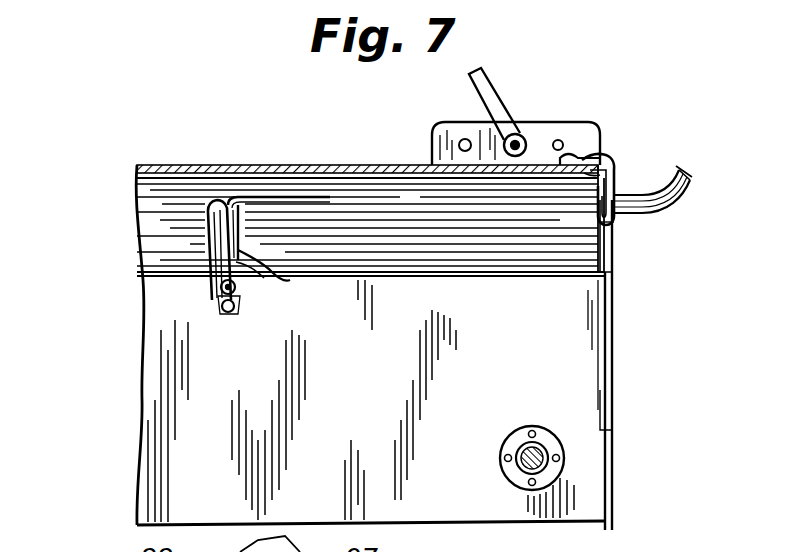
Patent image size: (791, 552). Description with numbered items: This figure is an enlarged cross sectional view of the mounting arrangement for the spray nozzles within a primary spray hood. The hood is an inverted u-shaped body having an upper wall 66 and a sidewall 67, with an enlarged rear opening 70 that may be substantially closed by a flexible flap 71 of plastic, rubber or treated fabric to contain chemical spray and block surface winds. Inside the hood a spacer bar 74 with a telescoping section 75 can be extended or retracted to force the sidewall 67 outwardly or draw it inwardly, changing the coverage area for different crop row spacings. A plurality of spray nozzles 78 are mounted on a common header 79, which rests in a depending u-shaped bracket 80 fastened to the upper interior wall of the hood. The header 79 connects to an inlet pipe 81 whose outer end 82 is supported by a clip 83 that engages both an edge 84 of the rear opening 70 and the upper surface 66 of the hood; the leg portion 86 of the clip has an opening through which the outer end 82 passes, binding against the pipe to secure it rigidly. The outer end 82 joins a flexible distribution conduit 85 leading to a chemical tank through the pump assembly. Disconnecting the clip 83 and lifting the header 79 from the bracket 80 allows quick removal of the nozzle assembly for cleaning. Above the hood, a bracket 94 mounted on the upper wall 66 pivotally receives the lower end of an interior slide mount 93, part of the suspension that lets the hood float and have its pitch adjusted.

The upper wall 66 is at (268, 133).
The sidewall 67 is at (148, 334).
The rear opening 70 is at (612, 370).
The flexible flap 71 is at (613, 466).
The spacer bar 74 is at (505, 466).
The telescoping section 75 is at (556, 410).
The spray nozzle 78 is at (236, 310).
The header 79 is at (258, 270).
The u-shaped bracket 80 is at (205, 256).
The inlet pipe 81 is at (375, 197).
The outer end of inlet pipe 82 is at (614, 218).
The clip 83 is at (602, 162).
The edge 84 is at (576, 158).
The flexible distribution conduit 85 is at (688, 182).
The leg portion 86 is at (614, 178).
The interior slide mount 93 is at (487, 83).
The bracket 94 is at (453, 132).